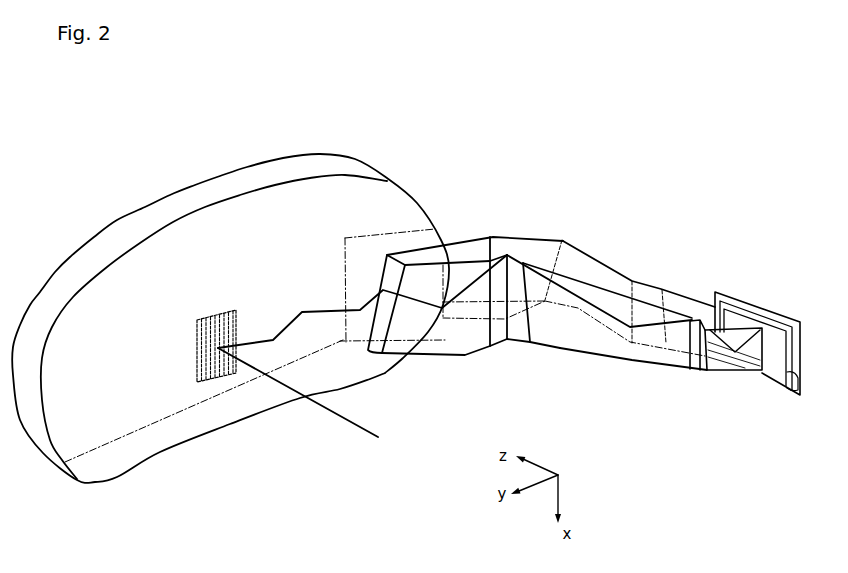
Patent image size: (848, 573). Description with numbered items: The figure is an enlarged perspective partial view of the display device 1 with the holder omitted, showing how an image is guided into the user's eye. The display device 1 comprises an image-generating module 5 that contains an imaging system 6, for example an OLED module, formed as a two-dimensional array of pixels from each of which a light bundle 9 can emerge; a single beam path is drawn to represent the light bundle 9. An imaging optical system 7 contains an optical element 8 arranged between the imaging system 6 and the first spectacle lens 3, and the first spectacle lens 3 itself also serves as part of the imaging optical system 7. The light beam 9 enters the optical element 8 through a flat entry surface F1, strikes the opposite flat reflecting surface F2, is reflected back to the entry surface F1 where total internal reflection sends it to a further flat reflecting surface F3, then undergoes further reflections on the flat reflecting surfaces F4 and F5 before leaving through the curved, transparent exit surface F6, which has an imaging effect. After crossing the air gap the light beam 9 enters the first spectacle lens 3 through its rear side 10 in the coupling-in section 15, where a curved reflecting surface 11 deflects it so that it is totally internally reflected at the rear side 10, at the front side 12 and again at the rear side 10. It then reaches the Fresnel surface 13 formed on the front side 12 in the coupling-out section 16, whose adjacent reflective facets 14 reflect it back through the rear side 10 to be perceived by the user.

The display device 1 is at (230, 300).
The first spectacle lens 3 is at (277, 160).
The image-generating module 5 is at (752, 292).
The imaging system 6 is at (775, 357).
The imaging optical system 7 is at (628, 266).
The optical element 8 is at (590, 262).
The light bundle 9 is at (580, 307).
The rear side 10 is at (100, 458).
The reflecting surface 11 is at (390, 268).
The front side 12 is at (186, 186).
The Fresnel surface 13 is at (206, 393).
The reflective facets 14 is at (225, 378).
The coupling-in section 15 is at (356, 343).
The coupling-out section 16 is at (186, 364).
The entry surface F1 is at (690, 302).
The reflecting surface F2 is at (726, 366).
The further flat reflecting surface F3 is at (620, 347).
The flat reflecting surface F4 is at (530, 238).
The flat reflecting surface F5 is at (458, 335).
The exit surface F6 is at (390, 253).